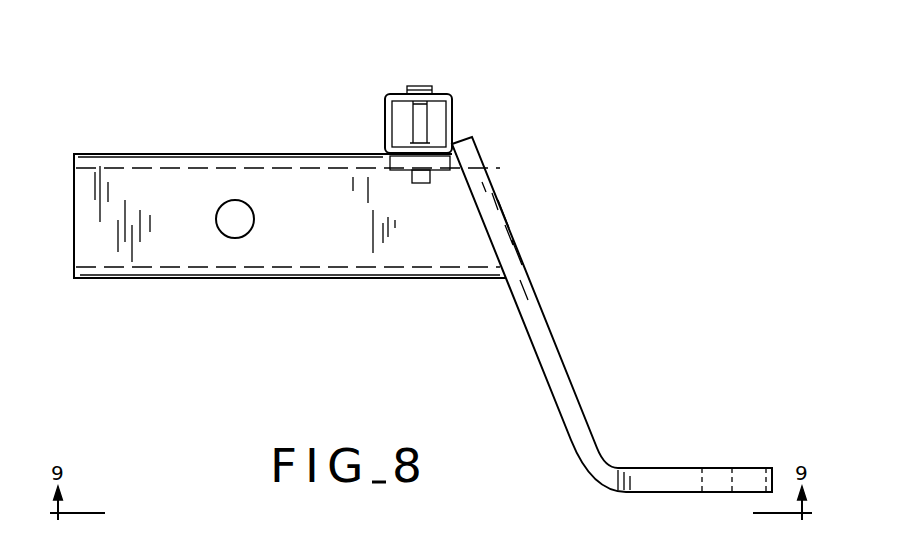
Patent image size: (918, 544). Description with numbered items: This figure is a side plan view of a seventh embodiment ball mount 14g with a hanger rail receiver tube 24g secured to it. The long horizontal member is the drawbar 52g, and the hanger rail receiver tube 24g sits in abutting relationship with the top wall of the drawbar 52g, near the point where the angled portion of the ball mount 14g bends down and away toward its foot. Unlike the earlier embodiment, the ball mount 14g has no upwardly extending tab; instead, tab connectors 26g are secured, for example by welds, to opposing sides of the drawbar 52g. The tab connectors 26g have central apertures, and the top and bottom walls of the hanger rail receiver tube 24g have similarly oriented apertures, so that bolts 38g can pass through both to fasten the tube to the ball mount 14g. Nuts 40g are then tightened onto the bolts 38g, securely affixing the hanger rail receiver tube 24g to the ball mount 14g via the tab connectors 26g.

The drawbar 52g is at (121, 176).
The ball mount 14g is at (546, 146).
The hanger rail receiver tube 24g is at (450, 96).
The bolts 38g is at (423, 86).
The tab connectors 26g is at (403, 150).
The nuts 40g is at (418, 172).